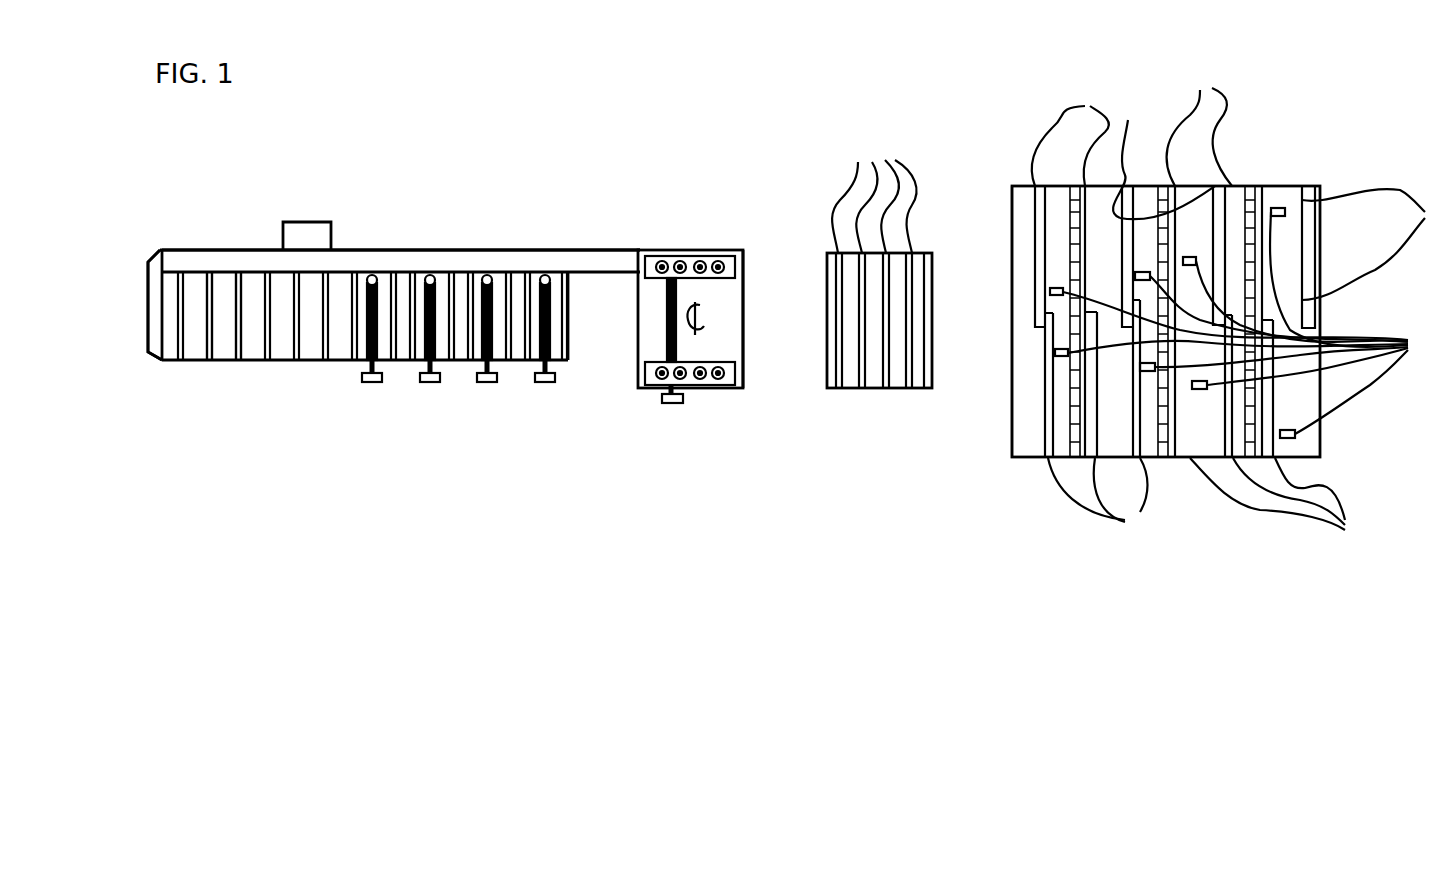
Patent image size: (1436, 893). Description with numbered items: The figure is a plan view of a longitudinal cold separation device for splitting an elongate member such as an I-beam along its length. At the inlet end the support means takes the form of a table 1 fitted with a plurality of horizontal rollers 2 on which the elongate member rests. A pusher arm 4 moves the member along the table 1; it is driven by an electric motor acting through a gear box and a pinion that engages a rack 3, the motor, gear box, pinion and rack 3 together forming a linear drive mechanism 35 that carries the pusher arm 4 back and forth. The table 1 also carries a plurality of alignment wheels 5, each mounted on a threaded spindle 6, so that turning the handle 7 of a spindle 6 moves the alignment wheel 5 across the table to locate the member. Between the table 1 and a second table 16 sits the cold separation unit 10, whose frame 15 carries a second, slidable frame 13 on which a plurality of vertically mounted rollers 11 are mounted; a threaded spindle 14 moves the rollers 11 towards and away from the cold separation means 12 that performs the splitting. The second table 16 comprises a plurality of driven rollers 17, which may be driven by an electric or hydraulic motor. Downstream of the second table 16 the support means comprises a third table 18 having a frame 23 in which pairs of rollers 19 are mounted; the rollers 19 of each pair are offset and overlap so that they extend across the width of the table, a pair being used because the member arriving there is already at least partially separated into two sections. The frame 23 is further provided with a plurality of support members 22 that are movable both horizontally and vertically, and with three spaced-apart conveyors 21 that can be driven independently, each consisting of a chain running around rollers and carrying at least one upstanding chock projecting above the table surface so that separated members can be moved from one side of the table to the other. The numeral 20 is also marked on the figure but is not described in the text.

The table 1 is at (308, 440).
The horizontal rollers 2 is at (242, 360).
The rack 3 is at (262, 250).
The pusher arm 4 is at (158, 254).
The alignment wheels 5 is at (545, 276).
The threaded spindle 6 is at (383, 375).
The handle 7 is at (370, 382).
The linear drive mechanism 35 is at (310, 236).
The cold separation unit 10 is at (690, 497).
The vertically mounted rollers 11 is at (718, 260).
The cold separation means 12 is at (704, 322).
The frame 13 is at (645, 260).
The threaded spindle 14 is at (665, 405).
The frame of the cold separation unit 15 is at (742, 278).
The second table 16 is at (868, 402).
The driven rollers 17 is at (874, 195).
The third table 18 is at (1173, 490).
The rollers 19 is at (1210, 501).
The upper wires 20 is at (1233, 192).
The conveyors 21 is at (1176, 140).
The support members 22 is at (1243, 323).
The frame 23 is at (1025, 440).